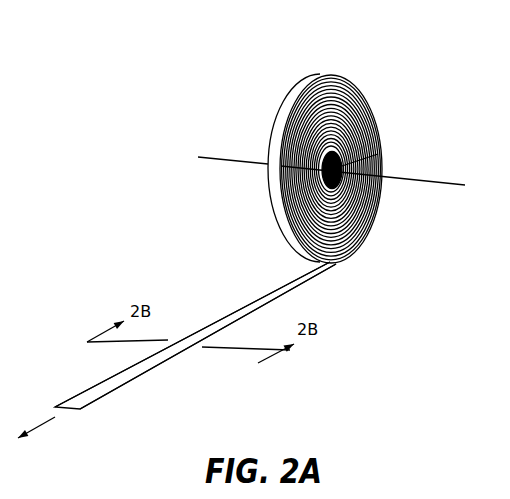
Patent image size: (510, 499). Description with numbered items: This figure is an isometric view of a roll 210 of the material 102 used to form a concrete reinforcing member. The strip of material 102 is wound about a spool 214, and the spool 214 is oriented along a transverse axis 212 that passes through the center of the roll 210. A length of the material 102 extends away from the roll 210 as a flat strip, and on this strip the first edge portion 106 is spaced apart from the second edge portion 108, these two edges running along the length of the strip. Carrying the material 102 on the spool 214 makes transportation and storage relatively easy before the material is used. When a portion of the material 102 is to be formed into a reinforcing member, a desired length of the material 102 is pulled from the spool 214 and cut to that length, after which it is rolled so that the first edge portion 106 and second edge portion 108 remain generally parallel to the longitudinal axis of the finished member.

The strip of material 102 is at (349, 93).
The first edge portion 106 is at (125, 369).
The second edge portion 108 is at (137, 377).
The roll of strip 210 is at (255, 82).
The transverse axis 212 is at (440, 183).
The spool 214 is at (378, 154).